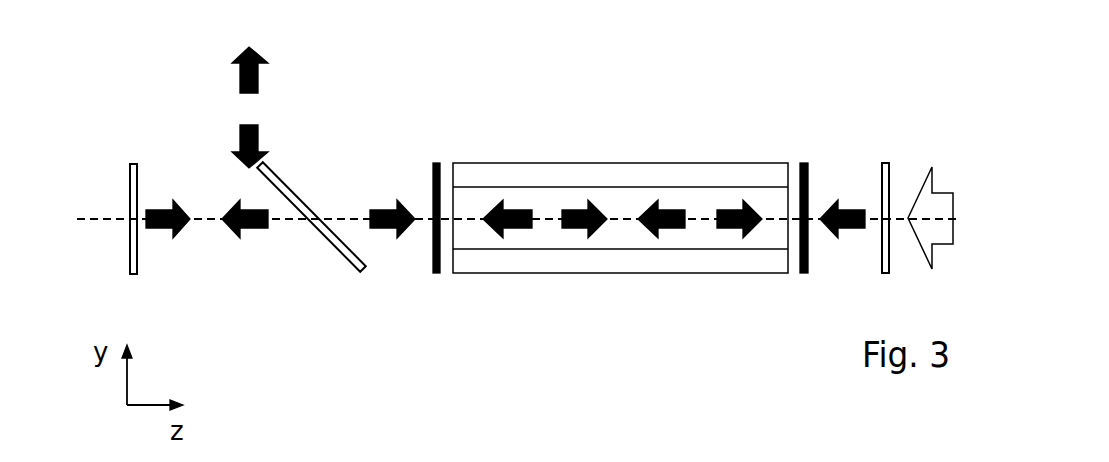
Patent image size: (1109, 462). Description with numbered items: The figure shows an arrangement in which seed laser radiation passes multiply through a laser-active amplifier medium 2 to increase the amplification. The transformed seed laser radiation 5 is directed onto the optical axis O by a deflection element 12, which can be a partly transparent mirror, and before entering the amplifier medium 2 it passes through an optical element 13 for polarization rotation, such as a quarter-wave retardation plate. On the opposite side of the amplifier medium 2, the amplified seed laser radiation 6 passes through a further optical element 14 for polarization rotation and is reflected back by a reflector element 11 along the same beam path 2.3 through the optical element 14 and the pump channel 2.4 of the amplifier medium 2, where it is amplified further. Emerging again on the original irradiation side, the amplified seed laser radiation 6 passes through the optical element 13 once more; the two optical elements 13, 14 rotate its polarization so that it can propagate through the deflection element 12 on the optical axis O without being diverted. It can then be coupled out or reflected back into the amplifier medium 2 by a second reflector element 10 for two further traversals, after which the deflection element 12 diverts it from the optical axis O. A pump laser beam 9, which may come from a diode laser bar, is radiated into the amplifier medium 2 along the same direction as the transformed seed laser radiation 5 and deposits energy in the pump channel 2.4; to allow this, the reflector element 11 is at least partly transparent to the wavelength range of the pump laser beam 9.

The laser-active amplifier medium 2 is at (630, 186).
The beam path 2.3 is at (535, 219).
The pump channel 2.4 is at (677, 242).
The transformed seed laser radiation 5 is at (318, 138).
The amplified seed laser radiation 6 is at (318, 76).
The pump laser beam 9 is at (937, 190).
The second reflector element 10 is at (132, 263).
The reflector element 11 is at (886, 189).
The deflection element 12 is at (343, 249).
The optical element for polarization rotation 13 is at (437, 164).
The further optical element for polarization rotation 14 is at (804, 163).
The optical axis O is at (287, 219).